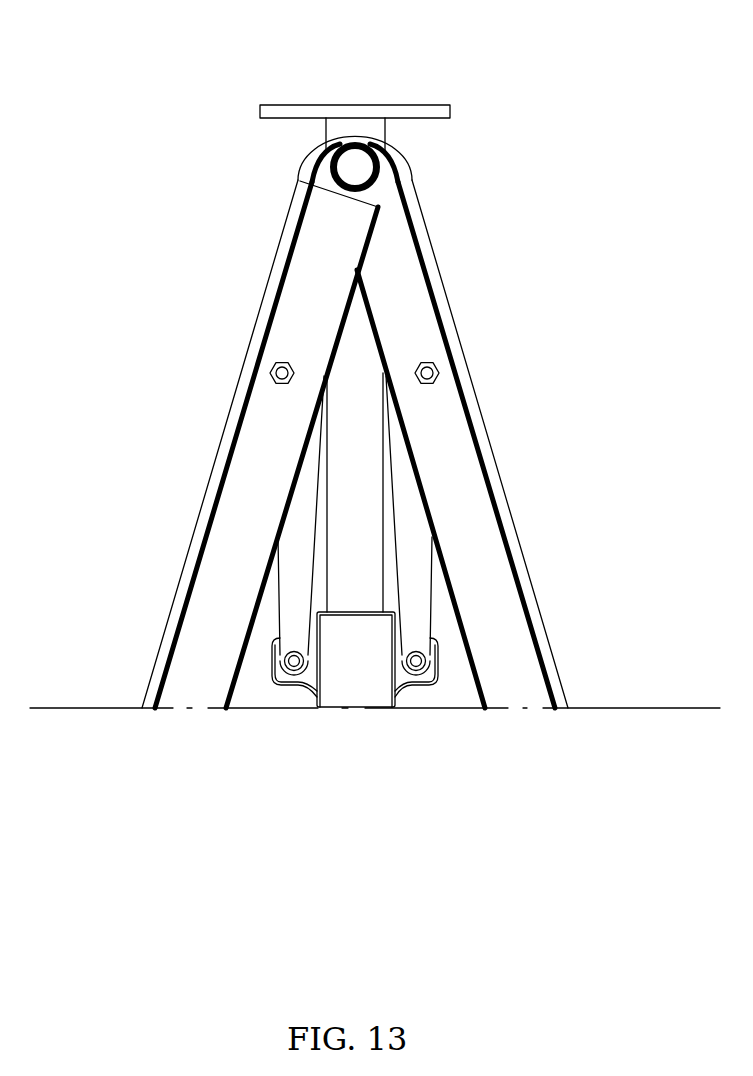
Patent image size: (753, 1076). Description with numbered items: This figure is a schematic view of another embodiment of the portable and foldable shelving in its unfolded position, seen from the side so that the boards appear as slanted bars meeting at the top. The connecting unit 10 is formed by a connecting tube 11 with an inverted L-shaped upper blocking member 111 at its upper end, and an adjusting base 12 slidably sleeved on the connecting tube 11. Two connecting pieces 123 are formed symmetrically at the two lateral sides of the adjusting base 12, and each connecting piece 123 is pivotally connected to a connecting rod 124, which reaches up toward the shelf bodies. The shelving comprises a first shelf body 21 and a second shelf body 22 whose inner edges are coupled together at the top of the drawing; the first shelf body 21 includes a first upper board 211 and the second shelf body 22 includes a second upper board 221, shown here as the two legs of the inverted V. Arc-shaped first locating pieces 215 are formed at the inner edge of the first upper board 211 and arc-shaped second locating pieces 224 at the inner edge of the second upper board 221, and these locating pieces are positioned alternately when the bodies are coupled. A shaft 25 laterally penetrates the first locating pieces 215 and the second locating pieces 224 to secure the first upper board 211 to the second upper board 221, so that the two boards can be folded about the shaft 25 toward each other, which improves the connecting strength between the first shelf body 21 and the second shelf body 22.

The connecting unit 10 is at (257, 617).
The connecting tube 11 is at (350, 478).
The adjusting base 12 is at (328, 678).
The connecting piece 123 is at (416, 684).
The connecting rod 124 is at (420, 556).
The upper blocking member 111 is at (430, 112).
The first shelf body 21 is at (485, 444).
The first upper board 211 is at (427, 300).
The second shelf body 22 is at (228, 444).
The second upper board 221 is at (300, 277).
The first locating piece 215 is at (300, 182).
The second locating piece 224 is at (403, 165).
The shaft 25 is at (330, 157).